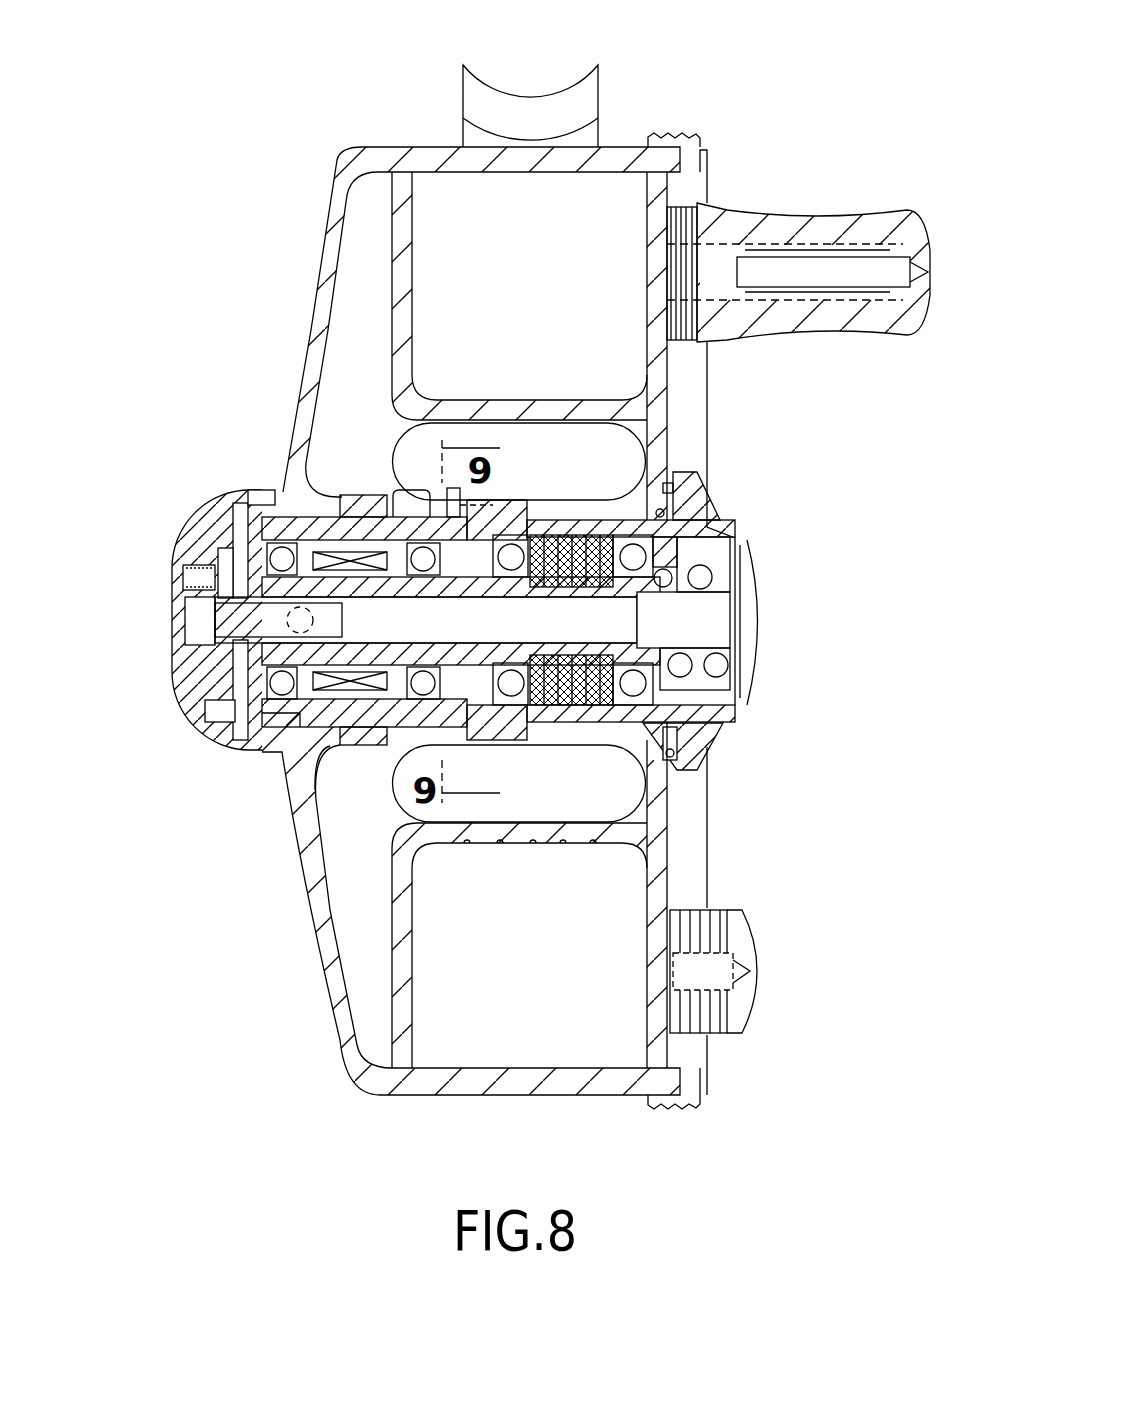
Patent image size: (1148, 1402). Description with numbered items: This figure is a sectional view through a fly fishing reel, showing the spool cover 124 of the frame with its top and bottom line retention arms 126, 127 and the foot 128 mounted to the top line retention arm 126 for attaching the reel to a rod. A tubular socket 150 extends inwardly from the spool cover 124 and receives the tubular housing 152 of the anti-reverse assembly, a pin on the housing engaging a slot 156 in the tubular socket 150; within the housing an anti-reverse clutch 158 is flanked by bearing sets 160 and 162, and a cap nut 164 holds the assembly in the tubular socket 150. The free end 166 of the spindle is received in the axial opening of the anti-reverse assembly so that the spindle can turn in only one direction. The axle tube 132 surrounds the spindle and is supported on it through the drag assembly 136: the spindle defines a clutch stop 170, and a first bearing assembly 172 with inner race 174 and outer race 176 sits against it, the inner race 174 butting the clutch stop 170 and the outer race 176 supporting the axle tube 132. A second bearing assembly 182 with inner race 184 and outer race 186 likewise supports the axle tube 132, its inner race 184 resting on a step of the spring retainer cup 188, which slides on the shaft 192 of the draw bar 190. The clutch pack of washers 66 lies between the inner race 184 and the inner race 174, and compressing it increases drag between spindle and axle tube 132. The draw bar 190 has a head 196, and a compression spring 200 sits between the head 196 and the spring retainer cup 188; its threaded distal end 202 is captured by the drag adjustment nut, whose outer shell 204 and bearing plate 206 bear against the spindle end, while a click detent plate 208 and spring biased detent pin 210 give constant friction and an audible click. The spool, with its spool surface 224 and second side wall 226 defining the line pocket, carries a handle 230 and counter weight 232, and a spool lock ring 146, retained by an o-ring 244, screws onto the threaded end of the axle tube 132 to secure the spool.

The clutch pack of washers 66 is at (583, 720).
The spool cover 124 is at (335, 950).
The top line retention arm 126 is at (555, 1085).
The bottom line retention arm 127 is at (439, 152).
The foot 128 is at (558, 88).
The axle tube 132 is at (560, 530).
The drag assembly 136 is at (540, 720).
The spool lock ring 146 is at (717, 733).
The tubular socket 150 is at (313, 857).
The tubular housing 152 is at (290, 545).
The slot 156 is at (377, 500).
The anti-reverse clutch 158 is at (247, 727).
The bearing set 160 is at (253, 510).
The bearing set 162 is at (413, 510).
The cap nut 164 is at (462, 505).
The free end 166 is at (250, 665).
The clutch stop 170 is at (462, 722).
The first bearing assembly 172 is at (490, 580).
The inner race 174 is at (538, 712).
The outer race 176 is at (513, 530).
The second bearing assembly 182 is at (613, 530).
The inner race 184 is at (700, 570).
The outer race 186 is at (655, 505).
The spring retainer cup 188 is at (680, 683).
The draw bar 190 is at (672, 610).
The shaft 192 is at (303, 797).
The head 196 is at (753, 582).
The compression spring 200 is at (720, 663).
The threaded distal end 202 is at (225, 612).
The outer shell 204 is at (193, 517).
The bearing plate 206 is at (215, 705).
The click detent plate 208 is at (232, 563).
The spring biased detent pin 210 is at (227, 580).
The spool surface 224 is at (470, 843).
The second side wall 226 is at (413, 1000).
The handle 230 is at (800, 213).
The counter weight 232 is at (745, 1020).
The o-ring 244 is at (657, 762).